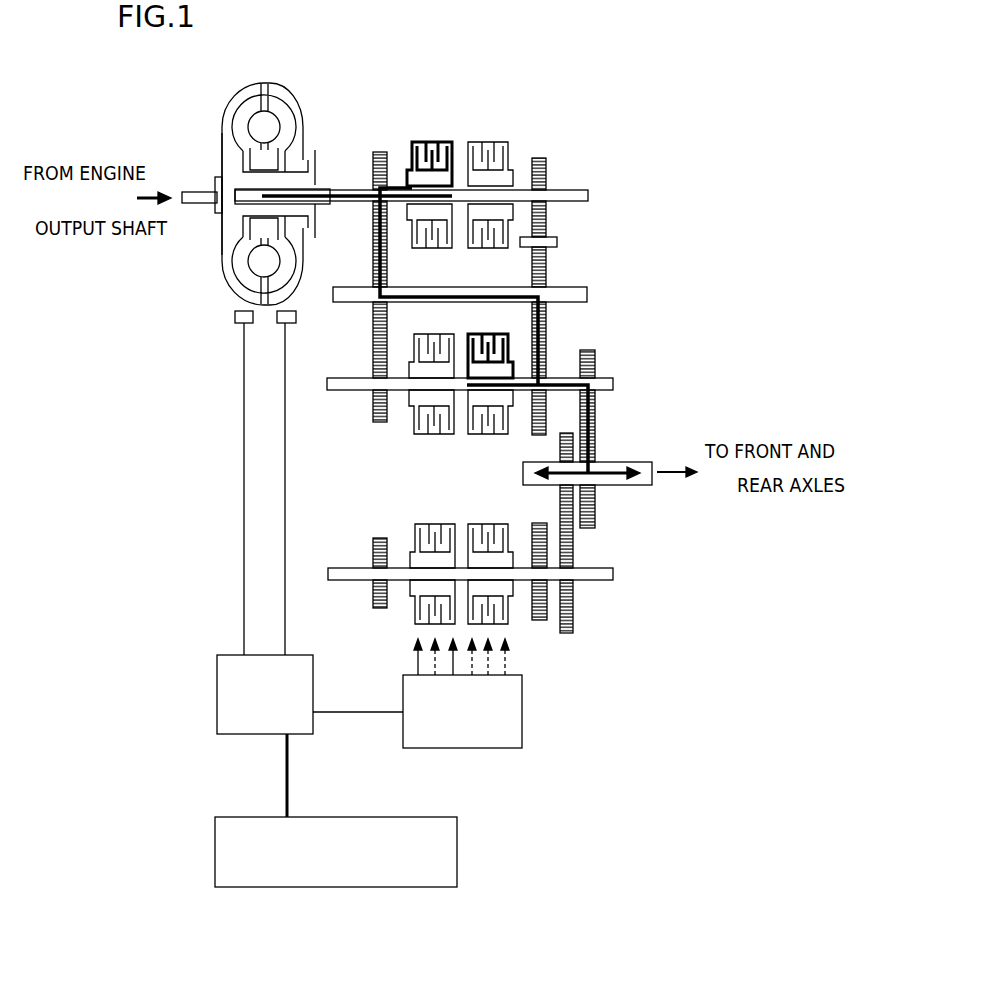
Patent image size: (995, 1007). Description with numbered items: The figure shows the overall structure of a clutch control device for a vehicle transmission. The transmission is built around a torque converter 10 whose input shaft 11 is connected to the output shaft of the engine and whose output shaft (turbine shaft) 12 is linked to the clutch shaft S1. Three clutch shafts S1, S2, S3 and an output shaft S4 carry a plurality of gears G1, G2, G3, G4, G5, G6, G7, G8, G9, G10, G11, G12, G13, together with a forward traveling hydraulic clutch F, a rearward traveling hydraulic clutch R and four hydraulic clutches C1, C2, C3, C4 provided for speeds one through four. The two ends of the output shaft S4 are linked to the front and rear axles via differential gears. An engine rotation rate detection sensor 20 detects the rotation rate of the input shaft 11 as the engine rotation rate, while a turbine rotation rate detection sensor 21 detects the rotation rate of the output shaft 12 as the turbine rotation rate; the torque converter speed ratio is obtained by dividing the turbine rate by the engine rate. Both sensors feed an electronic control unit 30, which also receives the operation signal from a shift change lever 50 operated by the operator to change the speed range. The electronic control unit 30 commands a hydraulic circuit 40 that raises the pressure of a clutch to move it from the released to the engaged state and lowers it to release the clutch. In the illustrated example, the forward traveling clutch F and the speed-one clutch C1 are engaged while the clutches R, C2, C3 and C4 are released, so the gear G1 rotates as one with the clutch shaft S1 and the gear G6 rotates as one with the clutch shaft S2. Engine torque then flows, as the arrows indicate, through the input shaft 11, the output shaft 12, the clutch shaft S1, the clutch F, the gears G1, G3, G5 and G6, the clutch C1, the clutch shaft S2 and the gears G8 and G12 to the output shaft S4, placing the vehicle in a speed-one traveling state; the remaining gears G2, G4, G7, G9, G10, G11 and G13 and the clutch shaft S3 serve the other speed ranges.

The torque converter 10 is at (266, 82).
The input shaft 11 is at (192, 190).
The output shaft (turbine shaft) 12 is at (322, 186).
The engine rotation rate detection sensor 20 is at (235, 316).
The turbine rotation rate detection sensor 21 is at (296, 316).
The electronic control unit 30 is at (262, 734).
The hydraulic circuit 40 is at (462, 748).
The shift change lever 50 is at (453, 887).
The clutch shaft S1 is at (588, 194).
The clutch shaft S2 is at (613, 385).
The clutch shaft S3 is at (602, 568).
The output shaft S4 is at (652, 466).
The forward traveling hydraulic clutch F is at (411, 142).
The rearward traveling hydraulic clutch R is at (500, 160).
The speed-1 hydraulic clutch C1 is at (488, 435).
The speed-2 hydraulic clutch C2 is at (432, 435).
The speed-3 hydraulic clutch C3 is at (470, 622).
The speed-4 hydraulic clutch C4 is at (420, 522).
The gear G1 is at (378, 151).
The gear G2 is at (544, 158).
The gear G3 is at (372, 252).
The gear G4 is at (557, 241).
The gear G5 is at (546, 262).
The gear G6 is at (546, 330).
The gear G7 is at (372, 366).
The gear G8 is at (596, 358).
The gear G9 is at (538, 622).
The gear G10 is at (378, 538).
The gear G11 is at (573, 626).
The gear G12 is at (596, 442).
The gear G13 is at (560, 500).